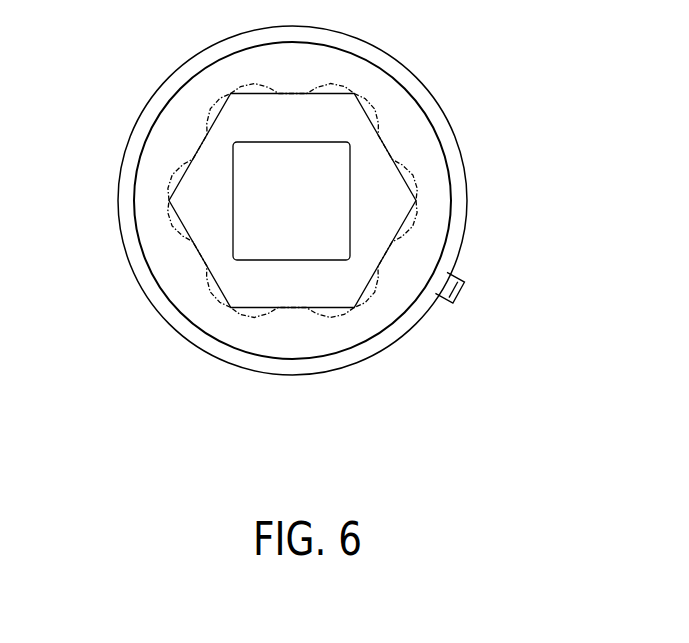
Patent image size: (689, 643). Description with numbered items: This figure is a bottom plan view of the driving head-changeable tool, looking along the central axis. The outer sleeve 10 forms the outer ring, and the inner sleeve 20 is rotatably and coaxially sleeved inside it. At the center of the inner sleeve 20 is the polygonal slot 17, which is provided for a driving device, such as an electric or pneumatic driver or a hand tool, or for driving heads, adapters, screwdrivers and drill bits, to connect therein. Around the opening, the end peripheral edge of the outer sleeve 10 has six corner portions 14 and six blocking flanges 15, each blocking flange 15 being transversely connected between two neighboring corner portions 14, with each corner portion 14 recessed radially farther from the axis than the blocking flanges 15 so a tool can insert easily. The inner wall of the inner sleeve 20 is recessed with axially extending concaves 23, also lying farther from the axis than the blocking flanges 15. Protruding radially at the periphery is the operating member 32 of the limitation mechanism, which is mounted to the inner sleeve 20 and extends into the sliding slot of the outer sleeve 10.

The outer sleeve 10 is at (457, 222).
The inner sleeve 20 is at (423, 147).
The polygonal slot 17 is at (233, 208).
The corner portion 14 is at (230, 307).
The blocking flange 15 is at (327, 307).
The concave 23 is at (243, 313).
The operating member 32 is at (453, 285).